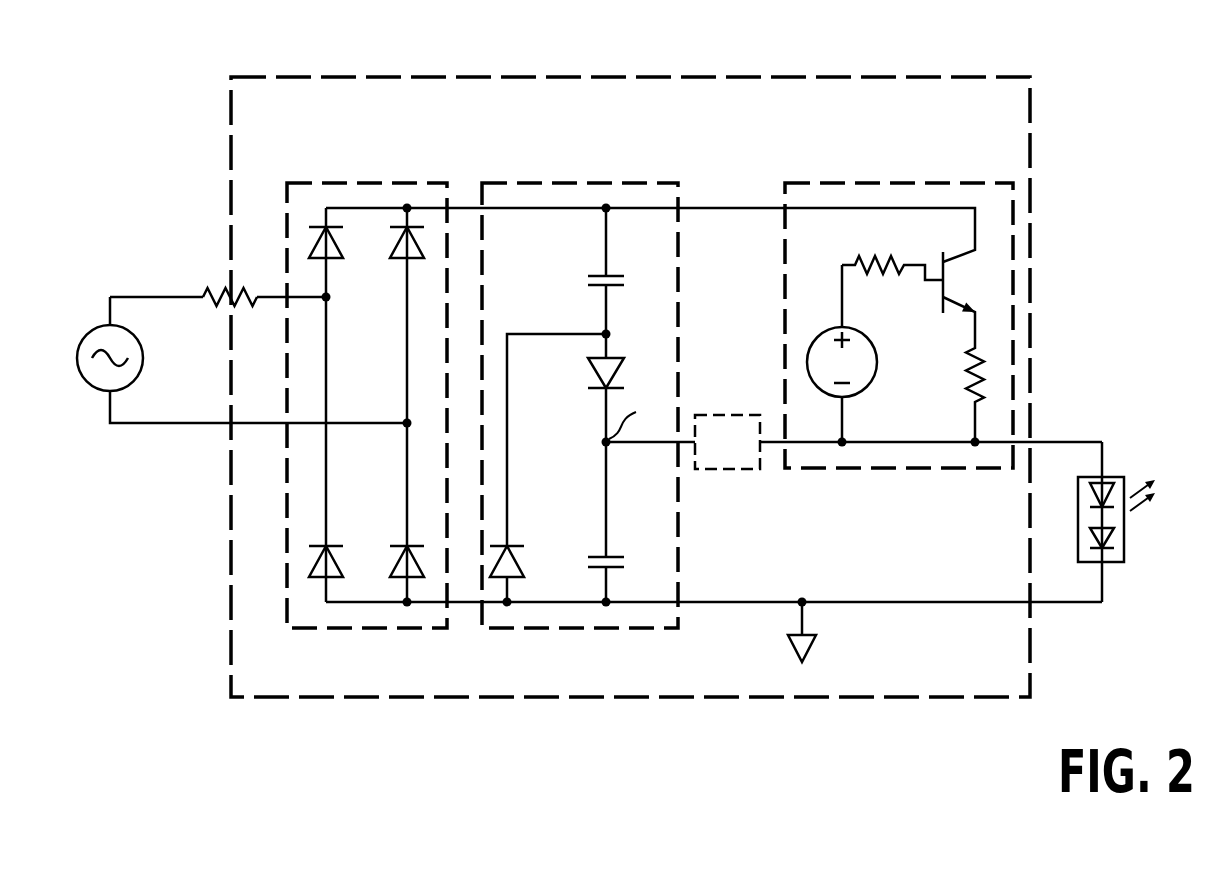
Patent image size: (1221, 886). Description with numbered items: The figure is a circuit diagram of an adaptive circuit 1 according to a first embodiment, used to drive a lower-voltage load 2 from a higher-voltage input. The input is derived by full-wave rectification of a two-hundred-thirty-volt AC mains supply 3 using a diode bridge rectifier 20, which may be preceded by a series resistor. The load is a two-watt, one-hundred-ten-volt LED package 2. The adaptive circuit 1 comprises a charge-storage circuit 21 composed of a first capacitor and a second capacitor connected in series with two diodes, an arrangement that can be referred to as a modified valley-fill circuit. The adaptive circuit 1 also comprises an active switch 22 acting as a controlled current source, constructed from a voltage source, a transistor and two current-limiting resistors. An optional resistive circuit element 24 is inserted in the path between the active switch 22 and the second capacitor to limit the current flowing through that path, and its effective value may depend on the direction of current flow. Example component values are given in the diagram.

The adaptive circuit 1 is at (736, 77).
The LED package 2 is at (1125, 543).
The AC mains supply 3 is at (80, 342).
The diode bridge rectifier 20 is at (355, 182).
The charge-storage circuit 21 is at (570, 182).
The active switch 22 is at (872, 182).
The resistive circuit element 24 is at (727, 470).